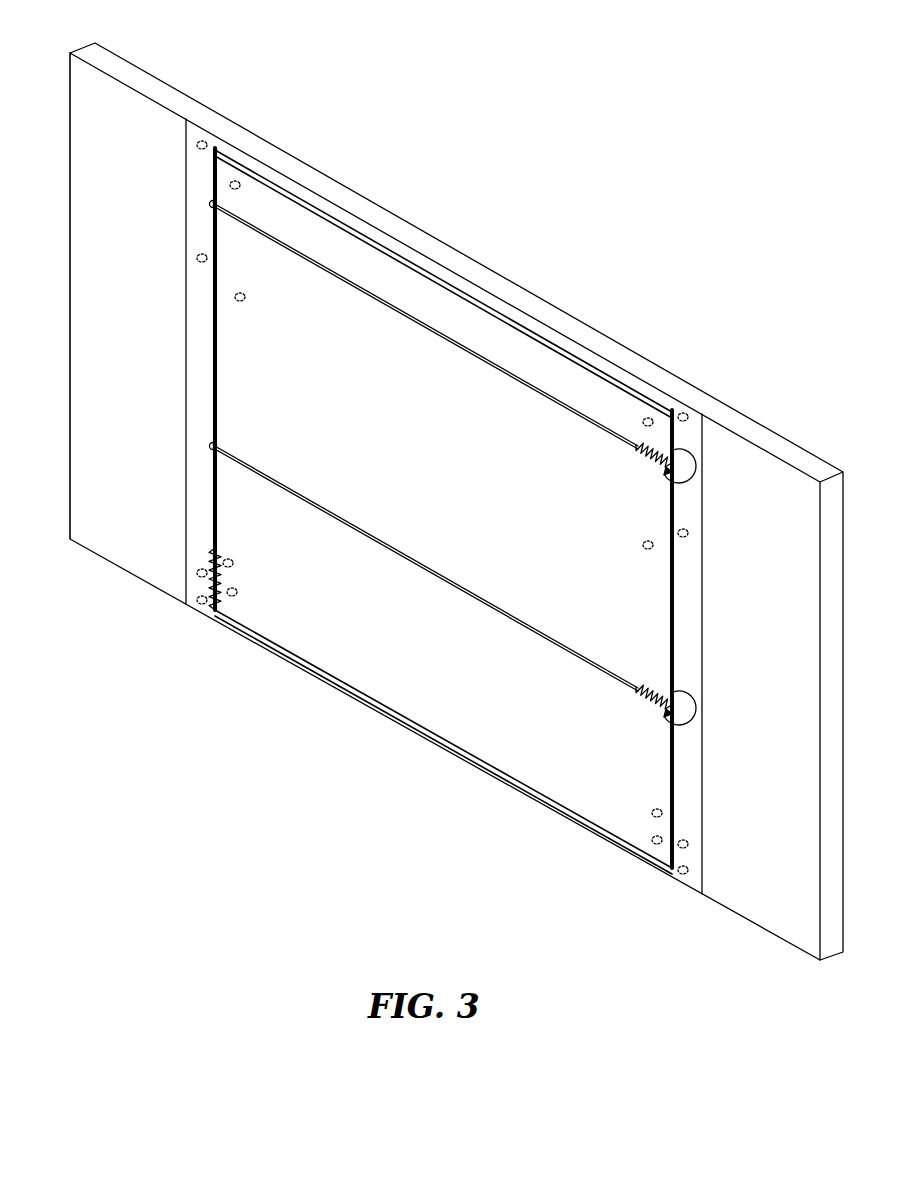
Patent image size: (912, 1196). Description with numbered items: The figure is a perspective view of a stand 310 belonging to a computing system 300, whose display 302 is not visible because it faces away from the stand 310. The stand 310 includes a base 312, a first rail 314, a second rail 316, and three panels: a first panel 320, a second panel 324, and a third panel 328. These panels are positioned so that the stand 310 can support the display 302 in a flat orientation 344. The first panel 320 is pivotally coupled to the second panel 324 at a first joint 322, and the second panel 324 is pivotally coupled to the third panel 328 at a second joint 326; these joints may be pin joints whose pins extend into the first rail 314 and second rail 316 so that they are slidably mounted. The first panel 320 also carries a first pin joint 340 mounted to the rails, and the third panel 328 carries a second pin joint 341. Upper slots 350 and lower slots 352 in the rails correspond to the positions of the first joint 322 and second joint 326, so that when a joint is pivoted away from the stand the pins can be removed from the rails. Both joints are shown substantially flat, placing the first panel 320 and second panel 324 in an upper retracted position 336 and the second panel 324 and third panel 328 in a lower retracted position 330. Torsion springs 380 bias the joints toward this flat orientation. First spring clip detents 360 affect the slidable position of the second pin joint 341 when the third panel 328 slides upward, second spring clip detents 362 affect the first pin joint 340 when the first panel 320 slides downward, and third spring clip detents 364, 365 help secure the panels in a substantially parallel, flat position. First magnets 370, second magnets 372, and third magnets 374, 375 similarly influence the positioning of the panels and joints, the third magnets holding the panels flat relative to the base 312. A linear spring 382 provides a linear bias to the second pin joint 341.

The computing system 300 is at (97, 56).
The display 302 is at (514, 240).
The stand 310 is at (373, 231).
The base 312 is at (157, 137).
The first rail 314 is at (186, 343).
The second rail 316 is at (697, 500).
The first panel 320 is at (420, 302).
The first joint 322 is at (463, 343).
The second panel 324 is at (425, 437).
The second joint 326 is at (402, 554).
The third panel 328 is at (432, 660).
The lower retracted position 330 is at (738, 736).
The upper retracted position 336 is at (740, 519).
The first pin joint 340 is at (490, 307).
The second pin joint 341 is at (480, 762).
The flat orientation 344 is at (338, 746).
The upper slots 350 is at (211, 202).
The lower slots 352 is at (211, 443).
The first spring clip detents 360 is at (686, 843).
The second spring clip detents 362 is at (686, 536).
The third spring clip detents 364 is at (686, 416).
The third spring clip detents 365 is at (686, 872).
The first magnets 370 is at (655, 812).
The second magnets 372 is at (648, 542).
The third magnets 374 is at (648, 418).
The third magnets 375 is at (655, 841).
The torsion springs 380 is at (640, 450).
The linear spring 382 is at (212, 548).